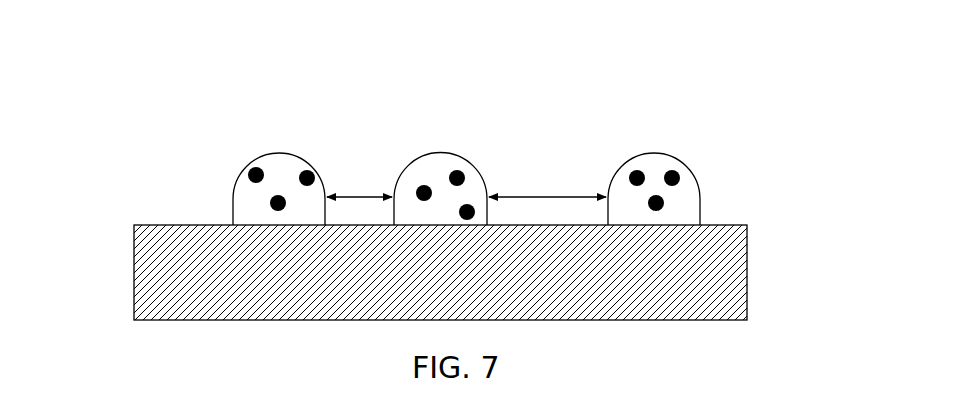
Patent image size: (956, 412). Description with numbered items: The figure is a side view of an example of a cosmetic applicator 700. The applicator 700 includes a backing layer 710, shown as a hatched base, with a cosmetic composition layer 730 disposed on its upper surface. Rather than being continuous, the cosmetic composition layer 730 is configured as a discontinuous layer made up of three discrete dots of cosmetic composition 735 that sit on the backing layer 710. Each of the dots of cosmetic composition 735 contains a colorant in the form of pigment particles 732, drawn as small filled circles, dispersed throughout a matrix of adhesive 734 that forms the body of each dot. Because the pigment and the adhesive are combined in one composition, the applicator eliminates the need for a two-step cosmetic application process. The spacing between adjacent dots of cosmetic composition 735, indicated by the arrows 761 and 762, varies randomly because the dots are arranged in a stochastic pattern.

The applicator 700 is at (207, 100).
The backing layer 710 is at (112, 225).
The cosmetic composition layer 730 is at (194, 155).
The pigment particles 732 is at (676, 174).
The matrix of adhesive 734 is at (678, 211).
The dots of cosmetic composition 735 is at (630, 164).
The arrow 761 is at (359, 185).
The arrow 762 is at (547, 184).